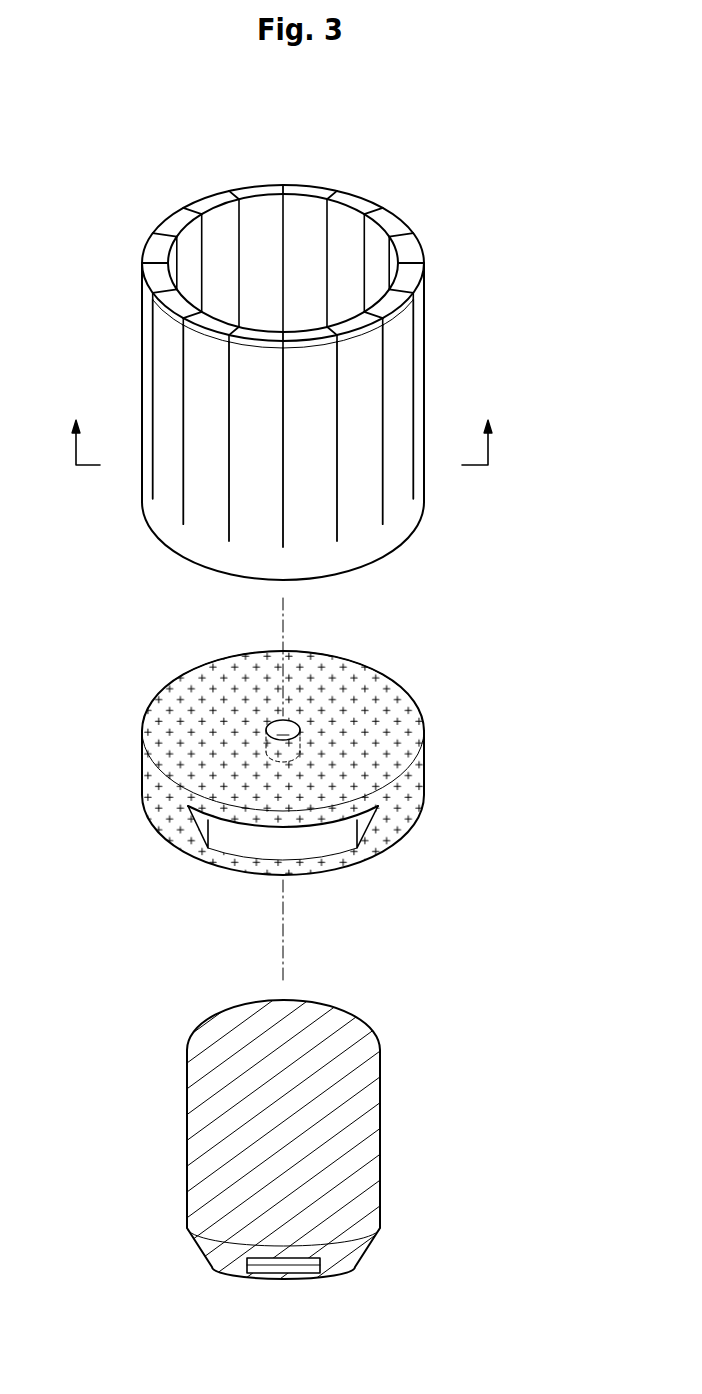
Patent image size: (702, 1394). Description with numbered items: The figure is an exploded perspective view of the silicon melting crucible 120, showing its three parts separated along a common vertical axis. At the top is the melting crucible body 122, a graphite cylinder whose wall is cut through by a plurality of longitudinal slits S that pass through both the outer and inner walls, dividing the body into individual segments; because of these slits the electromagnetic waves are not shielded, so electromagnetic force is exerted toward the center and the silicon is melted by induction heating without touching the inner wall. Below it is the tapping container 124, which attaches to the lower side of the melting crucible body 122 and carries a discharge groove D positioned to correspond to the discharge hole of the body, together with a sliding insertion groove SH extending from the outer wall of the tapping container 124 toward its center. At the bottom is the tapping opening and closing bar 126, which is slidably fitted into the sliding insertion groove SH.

The silicon melting crucible 120 is at (413, 163).
The melting crucible body 122 is at (402, 355).
The tapping container 124 is at (413, 781).
The tapping opening and closing bar 126 is at (343, 1124).
The slit S is at (243, 196).
The discharge groove D is at (298, 727).
The sliding insertion groove SH is at (322, 840).